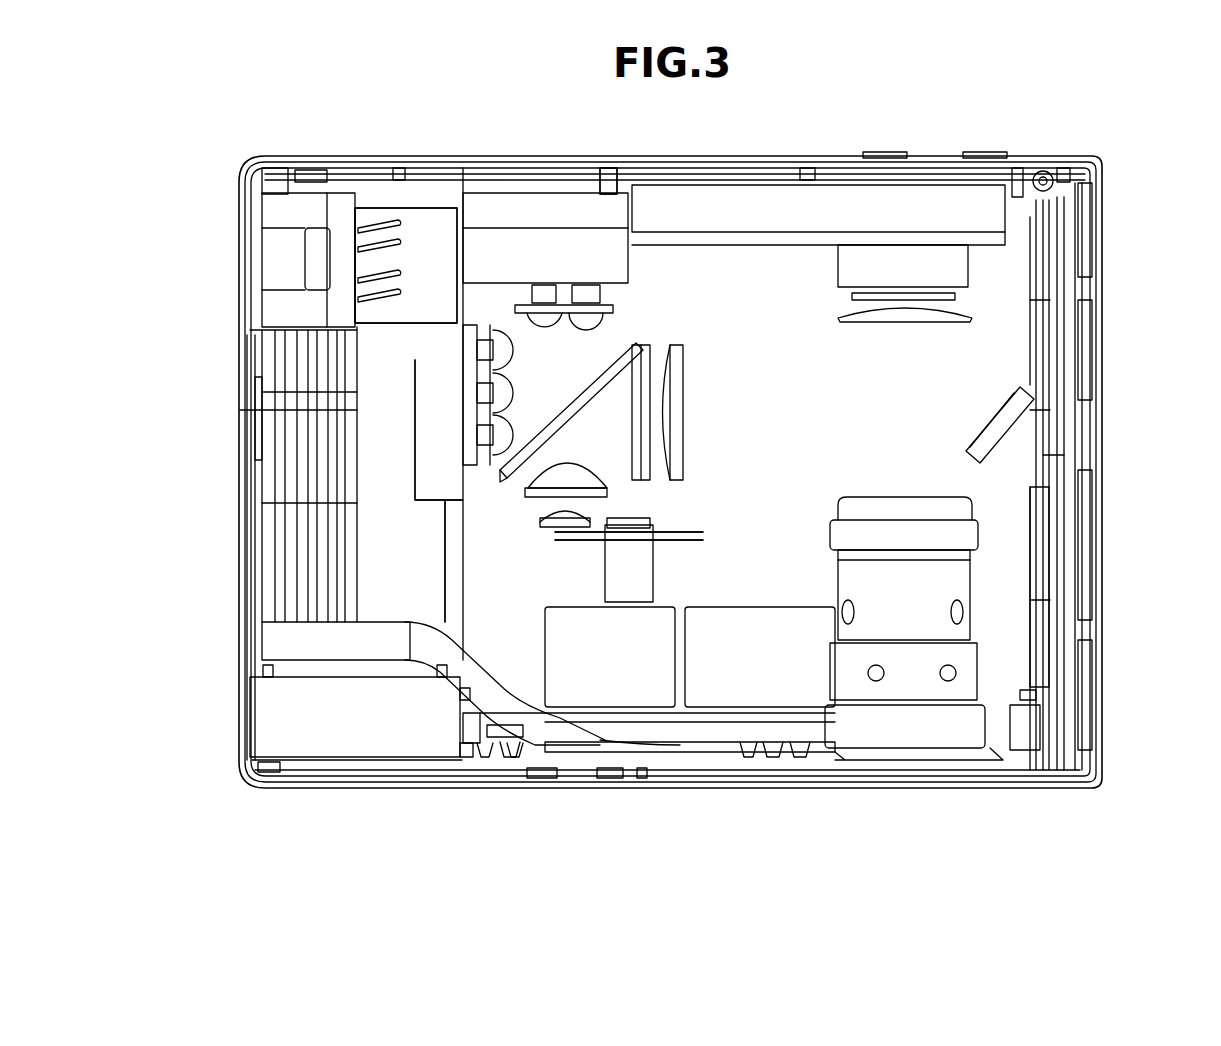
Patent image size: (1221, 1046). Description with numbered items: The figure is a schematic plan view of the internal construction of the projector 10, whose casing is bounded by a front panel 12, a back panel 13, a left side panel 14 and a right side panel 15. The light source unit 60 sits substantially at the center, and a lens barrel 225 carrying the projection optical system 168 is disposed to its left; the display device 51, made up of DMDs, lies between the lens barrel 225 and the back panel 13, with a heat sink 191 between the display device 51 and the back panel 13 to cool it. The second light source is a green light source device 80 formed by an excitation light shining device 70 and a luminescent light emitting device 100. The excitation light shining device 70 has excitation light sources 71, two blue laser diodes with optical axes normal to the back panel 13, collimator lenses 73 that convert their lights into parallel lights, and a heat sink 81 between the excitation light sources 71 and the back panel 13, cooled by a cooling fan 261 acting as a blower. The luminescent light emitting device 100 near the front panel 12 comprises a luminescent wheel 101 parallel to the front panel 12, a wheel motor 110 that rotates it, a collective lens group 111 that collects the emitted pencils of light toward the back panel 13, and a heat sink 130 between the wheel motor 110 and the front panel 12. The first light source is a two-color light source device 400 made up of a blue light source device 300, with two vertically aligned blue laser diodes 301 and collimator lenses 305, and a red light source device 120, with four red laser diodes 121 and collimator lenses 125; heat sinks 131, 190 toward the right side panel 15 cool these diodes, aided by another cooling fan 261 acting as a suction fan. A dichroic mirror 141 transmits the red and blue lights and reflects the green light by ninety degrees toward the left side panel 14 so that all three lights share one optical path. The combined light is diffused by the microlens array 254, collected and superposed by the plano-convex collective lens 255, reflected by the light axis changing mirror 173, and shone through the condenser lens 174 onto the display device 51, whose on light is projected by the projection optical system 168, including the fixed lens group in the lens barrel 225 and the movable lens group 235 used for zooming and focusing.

The projector 10 is at (1168, 132).
The front panel 12 is at (325, 790).
The back panel 13 is at (314, 168).
The left side panel 14 is at (1108, 292).
The right side panel 15 is at (245, 345).
The display device 51 is at (930, 282).
The light source unit 60 is at (624, 326).
The excitation light shining device 70 is at (518, 290).
The excitation light sources 71 is at (545, 283).
The collimator lenses 73 is at (590, 283).
The green light source device 80 is at (529, 461).
The heat sink 81 is at (527, 257).
The luminescent light emitting device 100 is at (583, 575).
The luminescent wheel 101 is at (700, 525).
The wheel motor 110 is at (630, 578).
The collective lens group 111 is at (537, 512).
The red light source device 120 is at (305, 491).
The red laser diodes 121 is at (463, 350).
The collimator lenses 125 is at (462, 290).
The heat sink 130 is at (275, 642).
The heat sink 131 is at (452, 450).
The dichroic mirror 141 is at (465, 628).
The projection optical system 168 is at (935, 626).
The light axis changing mirror 173 is at (1005, 422).
The condenser lens 174 is at (903, 300).
The heat sink 190 is at (268, 362).
The heat sink 191 is at (840, 220).
The lens barrel 225 is at (935, 742).
The movable lens group 235 is at (995, 570).
The microlens array 254 is at (645, 380).
The collective lens 255 is at (678, 400).
The cooling fan 261 is at (610, 210).
The blue light source device 300 is at (296, 573).
The blue laser diodes 301 is at (462, 396).
The collimator lenses 305 is at (462, 418).
The two-color light source device 400 is at (430, 470).